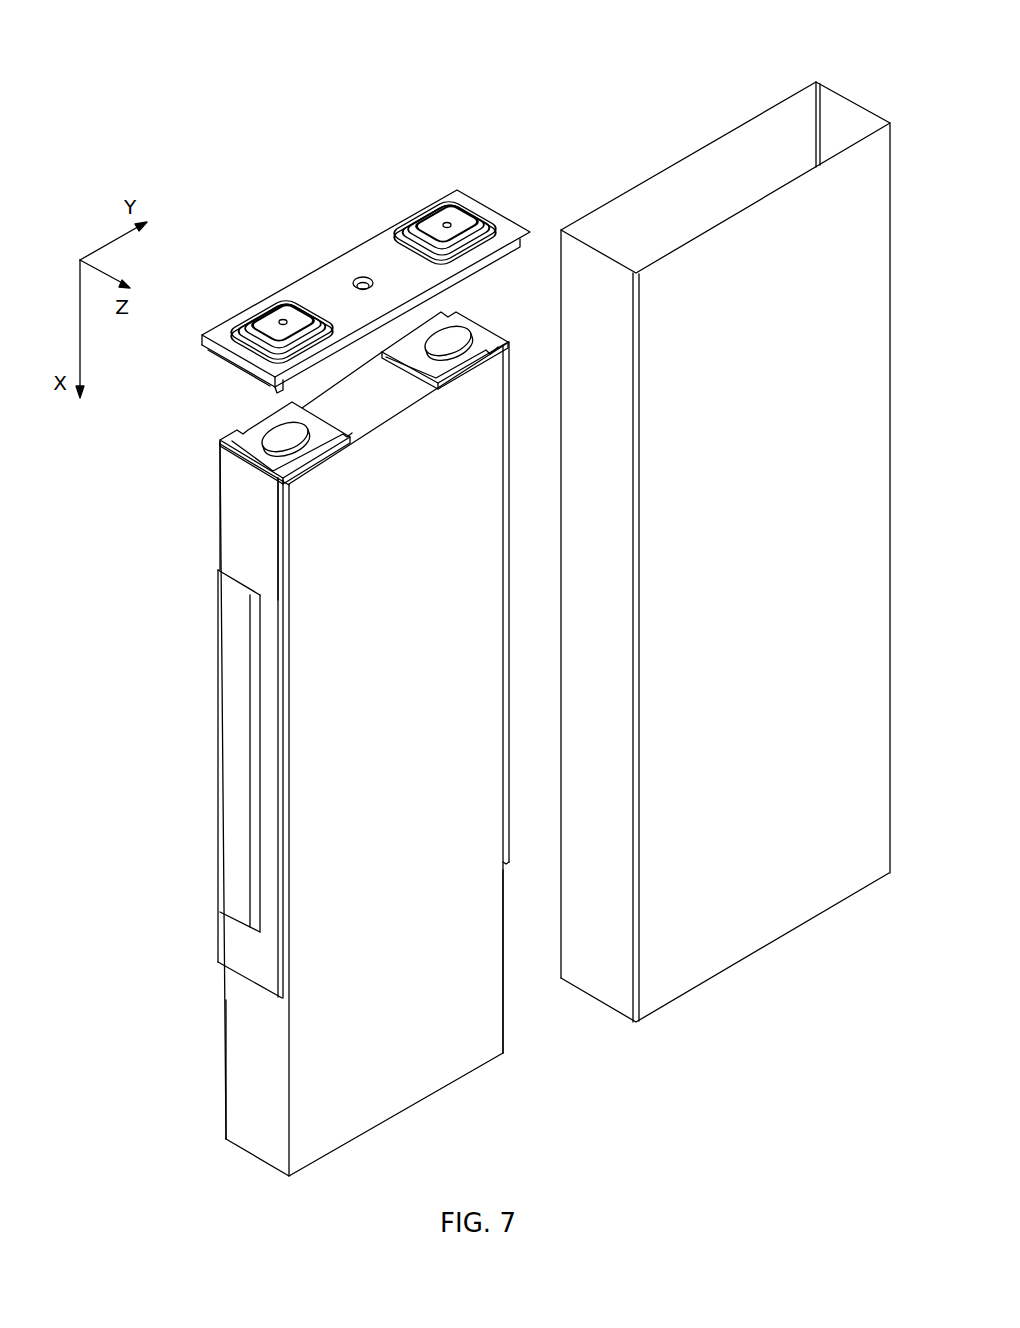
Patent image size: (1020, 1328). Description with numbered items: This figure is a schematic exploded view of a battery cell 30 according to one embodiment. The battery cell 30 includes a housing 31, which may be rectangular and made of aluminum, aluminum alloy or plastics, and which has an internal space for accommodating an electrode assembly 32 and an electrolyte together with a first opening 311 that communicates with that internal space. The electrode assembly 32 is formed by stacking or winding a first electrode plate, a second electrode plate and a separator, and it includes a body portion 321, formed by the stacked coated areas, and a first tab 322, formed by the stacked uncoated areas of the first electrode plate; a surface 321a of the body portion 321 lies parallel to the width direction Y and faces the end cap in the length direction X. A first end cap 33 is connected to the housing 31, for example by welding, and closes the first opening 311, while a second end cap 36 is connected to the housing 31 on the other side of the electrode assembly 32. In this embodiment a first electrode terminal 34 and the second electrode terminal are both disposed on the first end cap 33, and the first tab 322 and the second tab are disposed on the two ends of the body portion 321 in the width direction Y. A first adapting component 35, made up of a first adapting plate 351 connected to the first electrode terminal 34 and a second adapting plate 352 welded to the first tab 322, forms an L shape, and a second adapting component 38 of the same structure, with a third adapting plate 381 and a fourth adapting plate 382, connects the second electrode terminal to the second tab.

The battery cell 30 is at (112, 70).
The housing 31 is at (725, 583).
The first opening 311 is at (716, 182).
The electrode assembly 32 is at (288, 759).
The body portion 321 is at (357, 685).
The side surface of electrode assembly 321a is at (260, 1063).
The first tab 322 is at (230, 785).
The first end cap 33 is at (352, 265).
The first electrode terminal 34 is at (282, 320).
The first adapting component 35 is at (209, 501).
The first adapting plate 351 is at (240, 543).
The second adapting plate 352 is at (262, 424).
The second end cap 36 is at (440, 222).
The second adapting component 38 is at (484, 469).
The third adapting plate 381 is at (477, 323).
The fourth adapting plate 382 is at (513, 407).